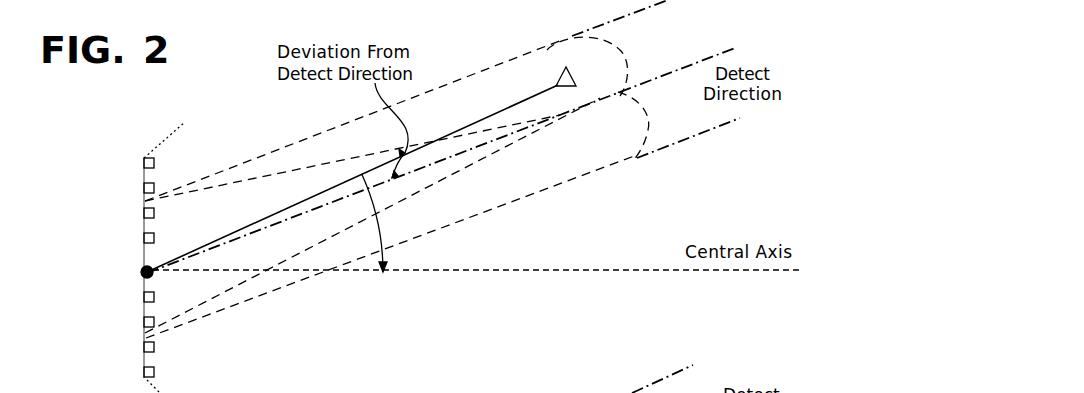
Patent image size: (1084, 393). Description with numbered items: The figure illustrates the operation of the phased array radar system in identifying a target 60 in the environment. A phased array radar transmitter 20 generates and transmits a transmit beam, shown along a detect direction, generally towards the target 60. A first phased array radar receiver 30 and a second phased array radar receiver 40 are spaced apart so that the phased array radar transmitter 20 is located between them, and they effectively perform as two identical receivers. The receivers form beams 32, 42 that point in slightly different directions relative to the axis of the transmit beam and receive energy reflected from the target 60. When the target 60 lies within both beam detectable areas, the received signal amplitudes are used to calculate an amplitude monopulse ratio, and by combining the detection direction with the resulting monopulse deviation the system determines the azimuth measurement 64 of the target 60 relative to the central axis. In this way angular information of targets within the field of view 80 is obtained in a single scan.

The phased array radar transmitter 20 is at (136, 272).
The first phased array radar receiver 30 is at (136, 198).
The second phased array radar receiver 40 is at (136, 348).
The field of view 80 is at (173, 133).
The beam 32 is at (442, 85).
The beam 42 is at (515, 203).
The target 60 is at (554, 80).
The azimuth measurement 64 is at (380, 232).